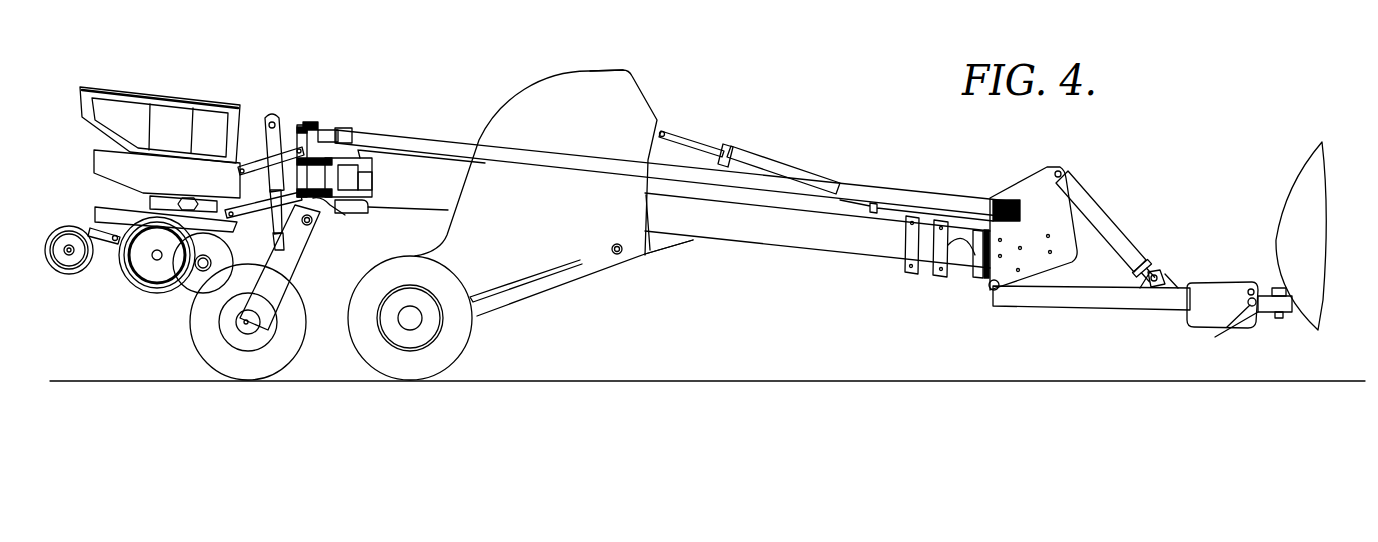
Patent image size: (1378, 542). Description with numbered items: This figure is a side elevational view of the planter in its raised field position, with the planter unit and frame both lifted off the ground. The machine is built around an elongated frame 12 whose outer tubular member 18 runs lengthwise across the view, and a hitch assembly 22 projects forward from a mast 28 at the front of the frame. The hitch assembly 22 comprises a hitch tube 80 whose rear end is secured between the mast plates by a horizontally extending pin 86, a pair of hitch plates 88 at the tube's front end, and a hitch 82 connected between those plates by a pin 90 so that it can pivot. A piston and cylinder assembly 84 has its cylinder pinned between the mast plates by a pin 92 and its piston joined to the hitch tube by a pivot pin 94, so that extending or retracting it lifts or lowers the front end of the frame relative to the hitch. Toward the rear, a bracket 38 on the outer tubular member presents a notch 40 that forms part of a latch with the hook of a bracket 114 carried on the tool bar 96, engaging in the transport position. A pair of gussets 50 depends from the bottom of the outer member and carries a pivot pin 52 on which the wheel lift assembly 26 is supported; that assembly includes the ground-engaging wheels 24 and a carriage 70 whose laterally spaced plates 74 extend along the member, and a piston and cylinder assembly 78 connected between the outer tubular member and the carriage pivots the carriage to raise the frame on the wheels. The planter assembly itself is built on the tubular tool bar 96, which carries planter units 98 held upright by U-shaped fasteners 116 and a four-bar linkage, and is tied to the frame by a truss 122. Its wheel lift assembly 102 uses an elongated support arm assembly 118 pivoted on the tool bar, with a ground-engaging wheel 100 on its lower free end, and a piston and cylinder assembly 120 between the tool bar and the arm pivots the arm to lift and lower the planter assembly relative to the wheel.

The frame 12 is at (822, 270).
The outer tubular member 18 is at (735, 232).
The hitch assembly 22 is at (1152, 232).
The ground-engaging wheels 24 is at (455, 342).
The wheel lift assembly 26 is at (548, 304).
The mast 28 is at (1028, 172).
The bracket 38 is at (908, 272).
The notch 40 is at (935, 245).
The gussets 50 is at (656, 253).
The pivot pin 52 is at (630, 262).
The carriage 70 is at (521, 93).
The plates 74 is at (583, 72).
The piston and cylinder assembly 78 is at (758, 153).
The hitch tube 80 is at (1092, 300).
The hitch 82 is at (1268, 312).
The piston and cylinder assembly 84 is at (1098, 194).
The pin 86 is at (996, 292).
The hitch plates 88 is at (1213, 293).
The pin 90 is at (1236, 322).
The pin 92 is at (1059, 170).
The pivot pin 94 is at (1160, 277).
The tool bar 96 is at (316, 202).
The planter units 98 is at (150, 86).
The ground-engaging wheels 100 is at (195, 333).
The wheel lift assembly 102 is at (309, 247).
The bracket 114 is at (355, 148).
The U-shaped fasteners 116 is at (320, 128).
The support arm assembly 118 is at (268, 300).
The piston and cylinder assembly 120 is at (257, 126).
The trusses 122 is at (546, 162).